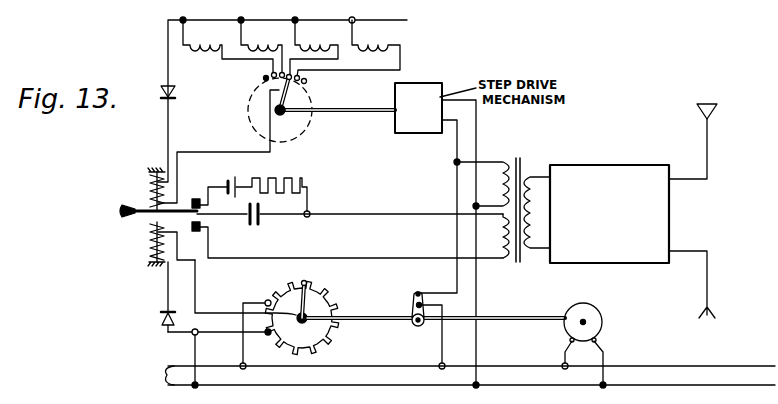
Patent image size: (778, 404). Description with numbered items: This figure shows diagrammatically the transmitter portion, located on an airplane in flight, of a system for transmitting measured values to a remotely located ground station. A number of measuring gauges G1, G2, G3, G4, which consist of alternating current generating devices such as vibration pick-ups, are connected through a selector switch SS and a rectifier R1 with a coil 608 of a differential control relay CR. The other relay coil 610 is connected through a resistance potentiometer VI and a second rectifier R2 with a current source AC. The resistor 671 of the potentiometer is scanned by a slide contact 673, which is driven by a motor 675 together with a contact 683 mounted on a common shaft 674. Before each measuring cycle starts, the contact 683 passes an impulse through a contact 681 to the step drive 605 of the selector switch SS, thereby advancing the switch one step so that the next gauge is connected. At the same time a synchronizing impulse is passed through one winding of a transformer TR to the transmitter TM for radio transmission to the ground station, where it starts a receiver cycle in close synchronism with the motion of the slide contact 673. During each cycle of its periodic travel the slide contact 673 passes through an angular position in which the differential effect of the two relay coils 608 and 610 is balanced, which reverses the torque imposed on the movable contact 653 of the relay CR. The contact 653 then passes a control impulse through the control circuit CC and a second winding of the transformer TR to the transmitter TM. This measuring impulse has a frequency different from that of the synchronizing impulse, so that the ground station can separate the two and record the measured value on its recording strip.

The step drive 605 is at (440, 90).
The coil of differential relay 608 is at (151, 192).
The relay coil 610 is at (150, 254).
The movable contact 653 is at (144, 219).
The resistor of the potentiometer 671 is at (281, 293).
The slide contact 673 is at (311, 294).
The common shaft 674 is at (492, 322).
The motor 675 is at (598, 311).
The contact 681 is at (416, 294).
The contact 683 is at (414, 306).
The rectifier R1 is at (172, 92).
The rectifier R2 is at (160, 317).
The measuring gauge G1 is at (228, 47).
The measuring gauge G2 is at (261, 47).
The measuring gauge G3 is at (314, 47).
The measuring gauge G4 is at (348, 48).
The selector switch SS is at (322, 155).
The control circuit CC is at (296, 241).
The control relay CR is at (110, 219).
The transformer TR is at (530, 285).
The transmitter TM is at (609, 167).
The resistance potentiometer VI is at (312, 346).
The current source AC is at (456, 375).